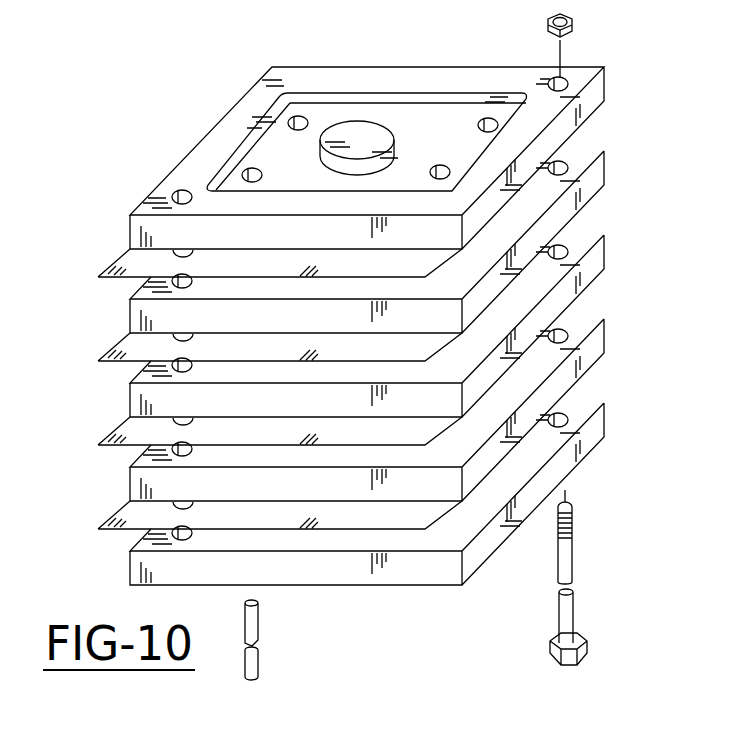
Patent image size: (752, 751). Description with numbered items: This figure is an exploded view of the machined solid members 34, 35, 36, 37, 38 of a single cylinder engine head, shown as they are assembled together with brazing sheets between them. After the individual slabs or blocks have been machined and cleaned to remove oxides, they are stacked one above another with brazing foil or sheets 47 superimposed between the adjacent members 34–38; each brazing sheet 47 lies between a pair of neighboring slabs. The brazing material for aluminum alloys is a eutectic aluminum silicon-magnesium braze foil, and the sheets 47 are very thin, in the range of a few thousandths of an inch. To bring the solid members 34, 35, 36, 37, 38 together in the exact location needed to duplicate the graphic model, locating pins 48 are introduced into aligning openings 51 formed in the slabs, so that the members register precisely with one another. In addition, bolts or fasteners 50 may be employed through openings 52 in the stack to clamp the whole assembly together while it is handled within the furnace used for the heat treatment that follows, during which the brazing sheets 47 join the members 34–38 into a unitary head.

The solid member 34 is at (352, 158).
The solid member 35 is at (130, 314).
The solid member 36 is at (130, 405).
The solid member 37 is at (130, 490).
The solid member 38 is at (342, 476).
The brazing foil or sheet 47 is at (100, 270).
The locating pin 48 is at (259, 623).
The bolt or fastener 50 is at (572, 556).
The aligning opening 51 is at (258, 170).
The opening 52 is at (567, 422).